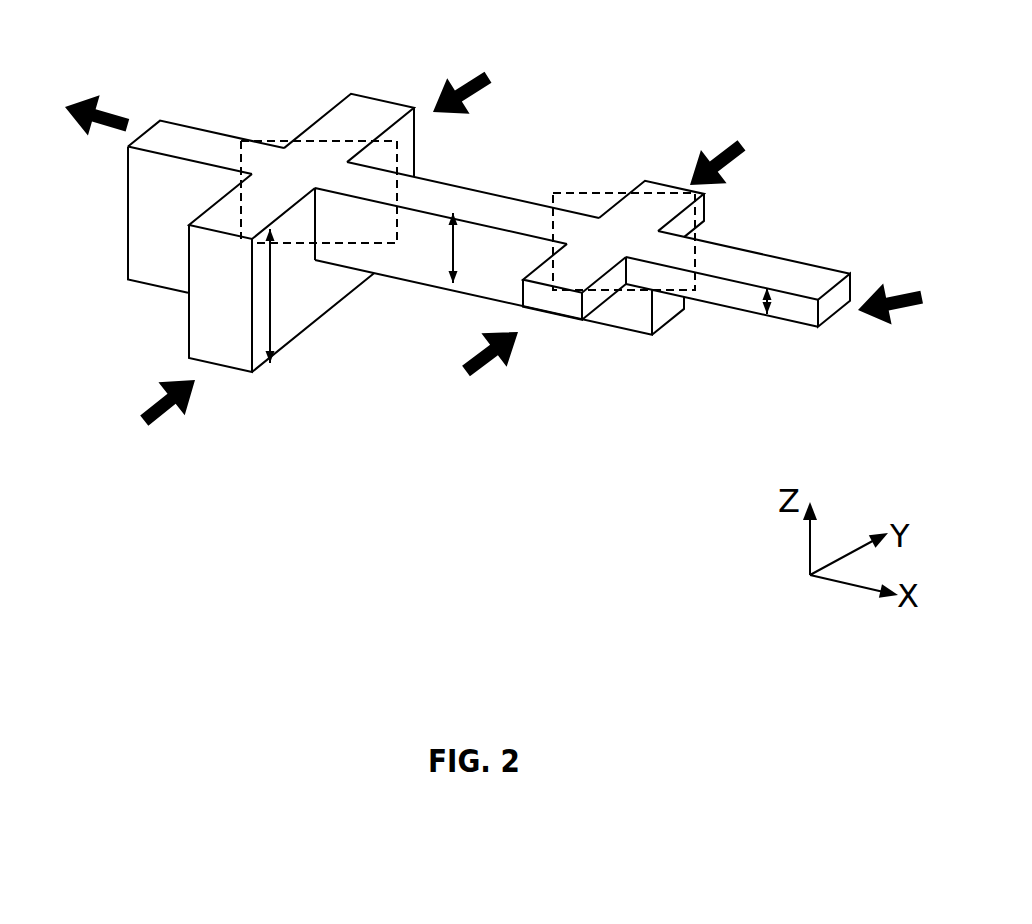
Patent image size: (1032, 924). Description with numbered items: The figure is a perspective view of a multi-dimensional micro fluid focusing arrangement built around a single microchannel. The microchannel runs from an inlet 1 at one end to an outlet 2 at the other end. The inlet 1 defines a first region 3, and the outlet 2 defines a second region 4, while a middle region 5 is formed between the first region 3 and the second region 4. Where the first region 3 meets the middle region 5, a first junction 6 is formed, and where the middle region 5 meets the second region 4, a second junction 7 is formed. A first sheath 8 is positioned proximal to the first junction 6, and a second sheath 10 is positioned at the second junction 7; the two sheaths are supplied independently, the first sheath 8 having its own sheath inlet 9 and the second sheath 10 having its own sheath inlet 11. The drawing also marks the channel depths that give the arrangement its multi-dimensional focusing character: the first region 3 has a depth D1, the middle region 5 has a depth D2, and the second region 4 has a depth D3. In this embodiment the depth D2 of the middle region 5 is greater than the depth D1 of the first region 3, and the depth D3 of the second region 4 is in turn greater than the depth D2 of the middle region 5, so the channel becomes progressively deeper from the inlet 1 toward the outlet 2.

The inlet 1 is at (834, 300).
The outlet 2 is at (128, 192).
The first region 3 is at (758, 270).
The second region 4 is at (155, 255).
The middle region 5 is at (612, 310).
The first junction 6 is at (604, 200).
The second junction 7 is at (327, 140).
The first sheath 8 is at (662, 181).
The sheath inlet 9 is at (547, 300).
The second sheath 10 is at (395, 100).
The sheath inlet 11 is at (204, 336).
The depth of first region D1 is at (778, 300).
The depth of middle region D2 is at (453, 244).
The depth of second region D3 is at (272, 290).